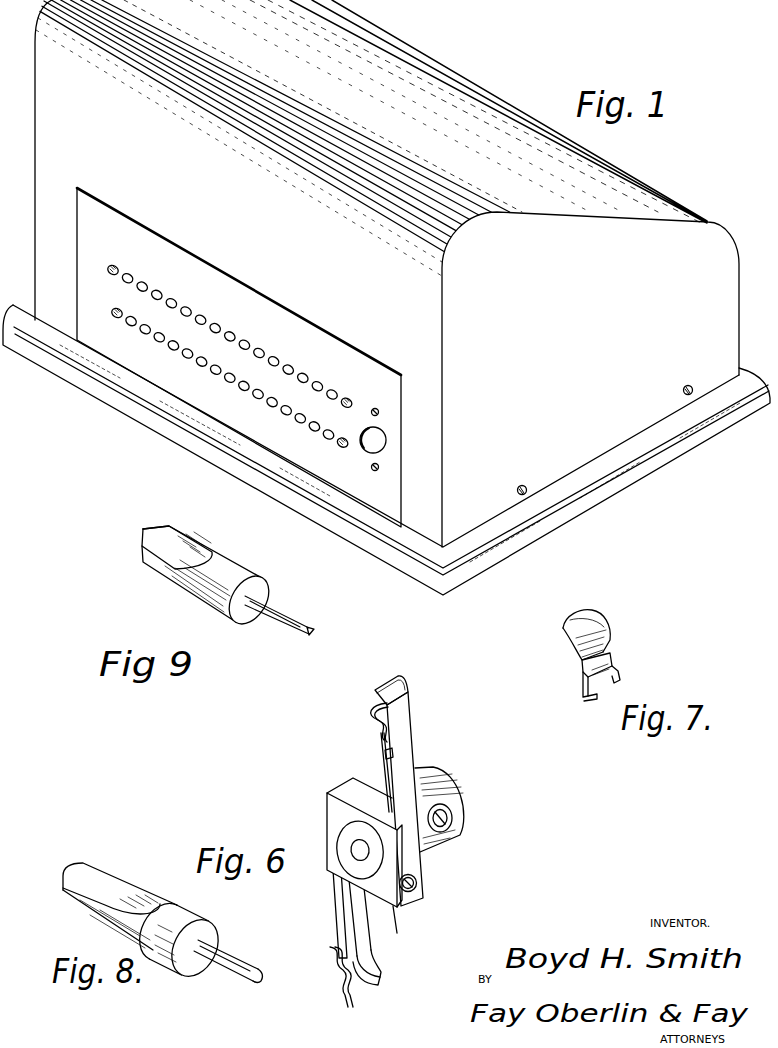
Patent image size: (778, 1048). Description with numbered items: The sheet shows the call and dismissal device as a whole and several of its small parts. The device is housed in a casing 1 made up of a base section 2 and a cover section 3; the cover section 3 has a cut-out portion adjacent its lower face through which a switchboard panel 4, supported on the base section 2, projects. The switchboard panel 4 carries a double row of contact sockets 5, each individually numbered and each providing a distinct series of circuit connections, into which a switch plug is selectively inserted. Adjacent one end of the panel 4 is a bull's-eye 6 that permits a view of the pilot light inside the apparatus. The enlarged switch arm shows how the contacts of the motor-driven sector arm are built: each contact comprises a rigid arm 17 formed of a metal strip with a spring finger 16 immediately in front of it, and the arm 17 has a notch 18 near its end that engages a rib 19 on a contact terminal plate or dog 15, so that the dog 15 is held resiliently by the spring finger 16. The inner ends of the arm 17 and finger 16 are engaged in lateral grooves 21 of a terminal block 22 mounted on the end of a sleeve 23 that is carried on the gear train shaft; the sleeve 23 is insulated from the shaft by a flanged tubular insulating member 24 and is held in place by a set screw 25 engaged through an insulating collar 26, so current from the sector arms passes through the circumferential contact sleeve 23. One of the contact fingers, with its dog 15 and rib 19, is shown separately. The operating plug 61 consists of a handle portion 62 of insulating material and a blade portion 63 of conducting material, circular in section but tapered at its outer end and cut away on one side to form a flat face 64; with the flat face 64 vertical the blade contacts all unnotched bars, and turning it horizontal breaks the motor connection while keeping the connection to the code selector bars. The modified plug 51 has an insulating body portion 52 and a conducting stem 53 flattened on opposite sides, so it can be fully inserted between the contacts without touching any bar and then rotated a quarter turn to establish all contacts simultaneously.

In FIG. 1, the casing 1 is at (371, 160).
In FIG. 1, the base section 2 is at (658, 452).
In FIG. 1, the cover section 3 is at (590, 379).
In FIG. 1, the switchboard panel 4 is at (348, 477).
In FIG. 1, the contact sockets 5 is at (131, 322).
In FIG. 1, the bull's-eye 6 is at (388, 448).
In FIG. 6, the contact terminal plates or dogs 15 is at (400, 680).
In FIG. 7, the contact terminal plates or dogs 15 is at (598, 625).
In FIG. 6, the spring finger 16 is at (403, 760).
In FIG. 6, the rigid arm 17 is at (383, 775).
In FIG. 6, the notch 18 is at (382, 730).
In FIG. 6, the rib 19 is at (383, 728).
In FIG. 7, the rib 19 is at (574, 668).
In FIG. 6, the lateral grooves 21 is at (430, 847).
In FIG. 6, the terminal block 22 is at (405, 932).
In FIG. 6, the sleeve 23 is at (433, 782).
In FIG. 6, the flanged tubular insulating member 24 is at (343, 840).
In FIG. 6, the set screw 25 is at (452, 820).
In FIG. 6, the insulating collar 26 is at (448, 811).
In FIG. 9, the plug 51 is at (209, 578).
In FIG. 9, the body portion 52 is at (203, 605).
In FIG. 9, the stem 53 is at (302, 631).
In FIG. 8, the operating plug 61 is at (120, 906).
In FIG. 8, the handle portion 62 is at (183, 917).
In FIG. 8, the blade portion 63 is at (220, 972).
In FIG. 8, the flat face 64 is at (247, 978).